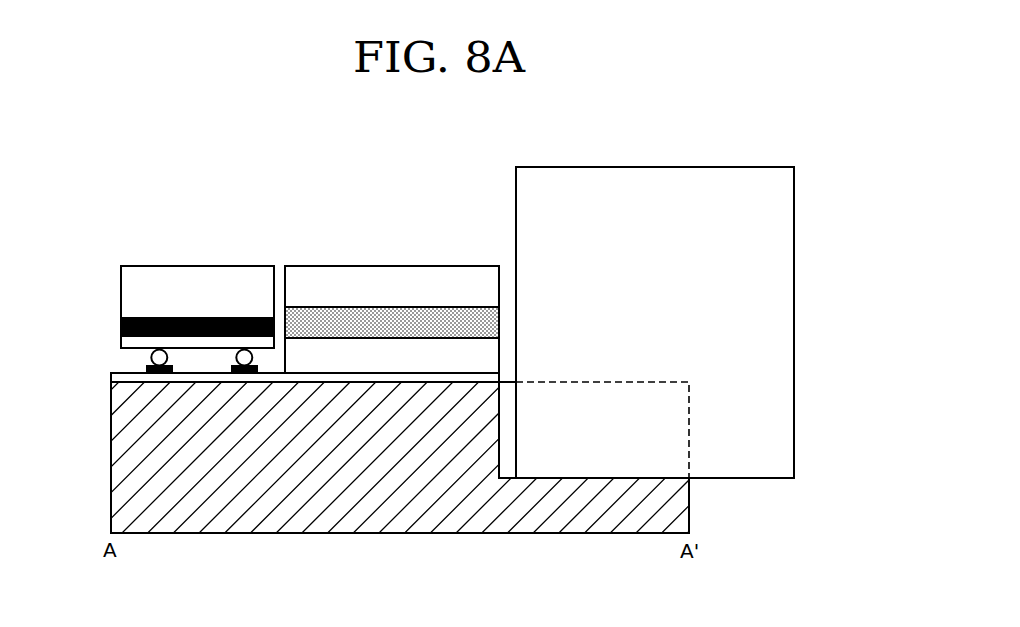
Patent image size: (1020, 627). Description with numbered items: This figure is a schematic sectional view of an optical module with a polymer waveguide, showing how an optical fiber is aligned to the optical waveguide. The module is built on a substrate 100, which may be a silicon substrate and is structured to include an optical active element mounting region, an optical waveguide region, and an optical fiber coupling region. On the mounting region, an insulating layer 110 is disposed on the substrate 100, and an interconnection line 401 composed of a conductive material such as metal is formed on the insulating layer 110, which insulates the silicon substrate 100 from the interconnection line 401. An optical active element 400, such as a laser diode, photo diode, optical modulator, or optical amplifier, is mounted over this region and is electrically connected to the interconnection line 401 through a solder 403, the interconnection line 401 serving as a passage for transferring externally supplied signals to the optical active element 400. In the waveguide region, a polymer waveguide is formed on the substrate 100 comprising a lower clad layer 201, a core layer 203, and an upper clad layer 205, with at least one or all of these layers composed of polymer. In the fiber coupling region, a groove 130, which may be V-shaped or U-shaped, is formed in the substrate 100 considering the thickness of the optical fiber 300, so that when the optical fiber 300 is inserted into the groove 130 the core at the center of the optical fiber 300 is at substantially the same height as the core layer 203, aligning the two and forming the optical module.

The substrate 100 is at (127, 453).
The insulating layer 110 is at (114, 378).
The groove 130 is at (507, 467).
The lower clad layer 201 is at (448, 352).
The core layer 203 is at (388, 318).
The upper clad layer 205 is at (330, 277).
The optical fiber 300 is at (646, 167).
The optical active element 400 is at (121, 302).
The interconnection line 401 is at (146, 367).
The solder 403 is at (150, 349).